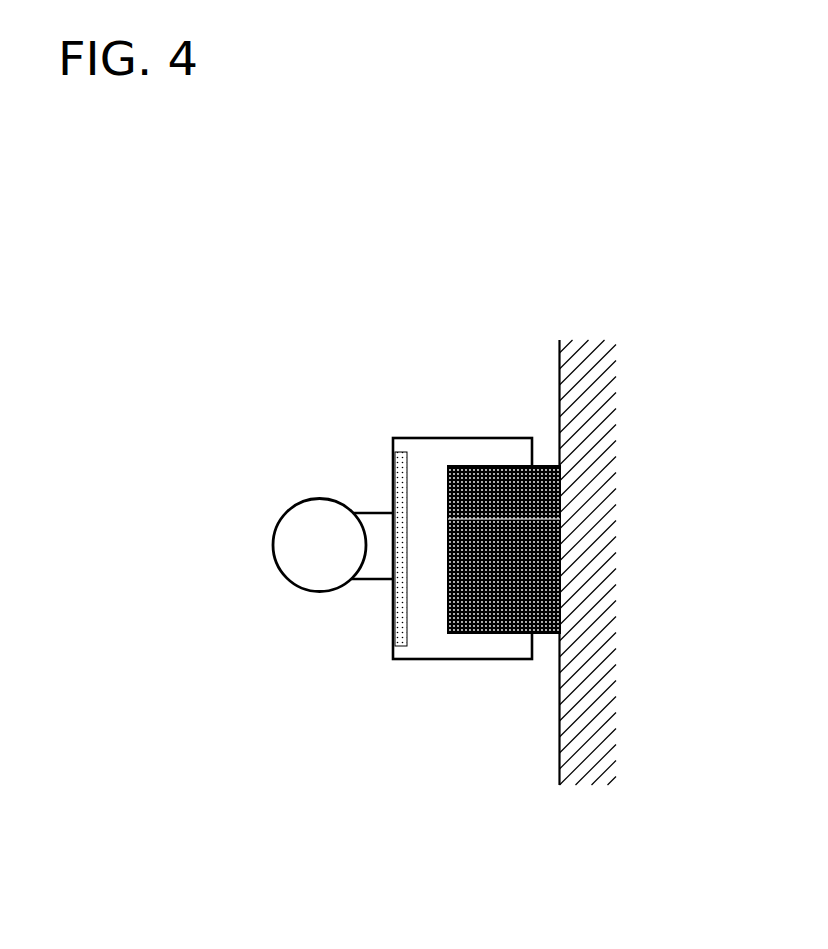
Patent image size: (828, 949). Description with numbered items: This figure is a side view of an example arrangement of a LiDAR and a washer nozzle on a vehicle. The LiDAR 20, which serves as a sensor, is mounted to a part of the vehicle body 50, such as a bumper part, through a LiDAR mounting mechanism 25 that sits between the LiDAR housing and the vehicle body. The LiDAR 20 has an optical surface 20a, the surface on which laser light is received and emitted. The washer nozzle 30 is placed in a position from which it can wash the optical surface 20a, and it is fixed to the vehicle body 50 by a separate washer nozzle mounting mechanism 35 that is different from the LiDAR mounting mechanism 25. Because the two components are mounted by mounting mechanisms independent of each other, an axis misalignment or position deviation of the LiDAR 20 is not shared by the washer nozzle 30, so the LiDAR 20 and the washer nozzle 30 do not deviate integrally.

The LiDAR 20 is at (443, 437).
The optical surface 20a is at (393, 633).
The LiDAR mounting mechanism 25 is at (503, 466).
The washer nozzle 30 is at (287, 512).
The washer nozzle mounting mechanism 35 is at (370, 512).
The vehicle body 50 is at (597, 340).